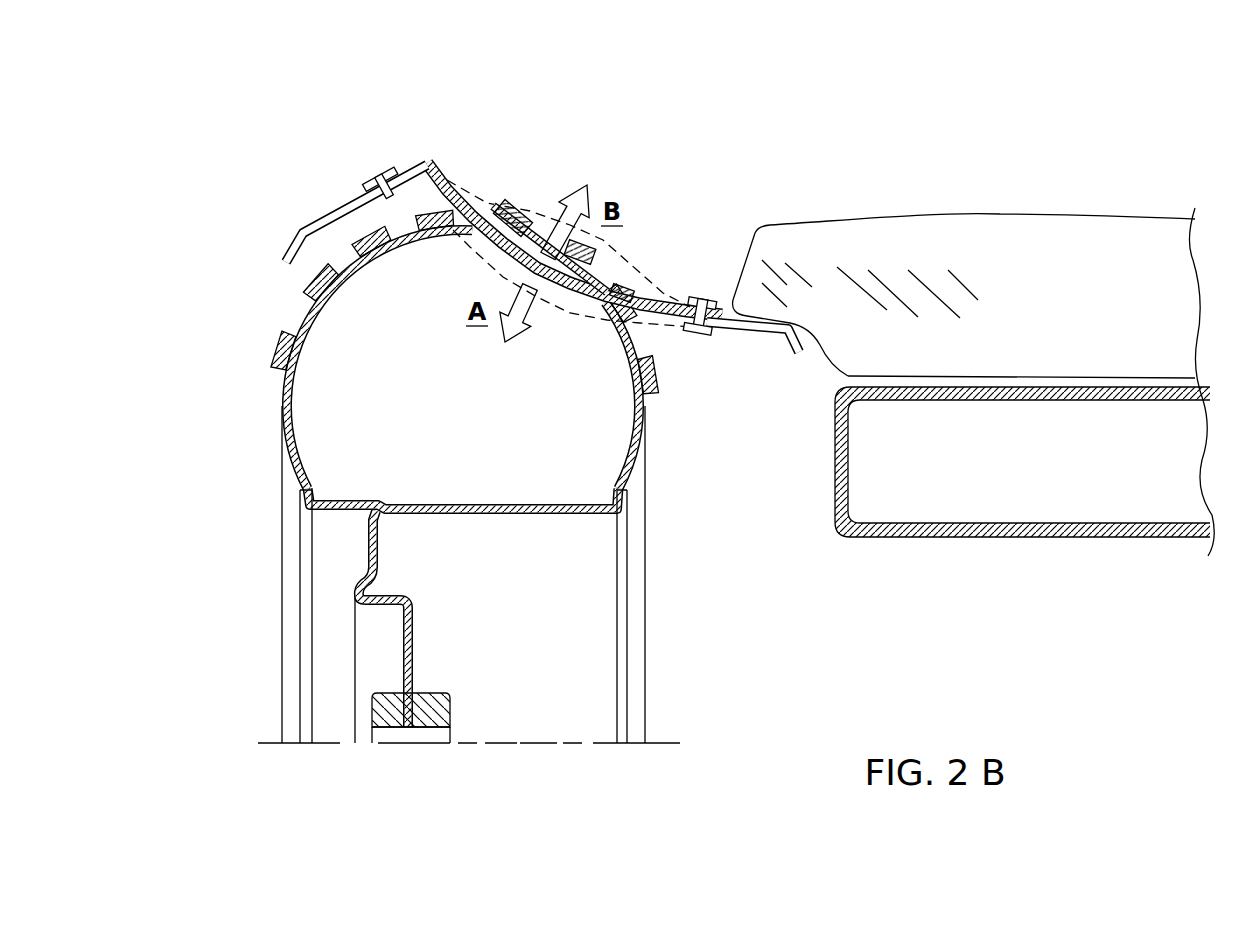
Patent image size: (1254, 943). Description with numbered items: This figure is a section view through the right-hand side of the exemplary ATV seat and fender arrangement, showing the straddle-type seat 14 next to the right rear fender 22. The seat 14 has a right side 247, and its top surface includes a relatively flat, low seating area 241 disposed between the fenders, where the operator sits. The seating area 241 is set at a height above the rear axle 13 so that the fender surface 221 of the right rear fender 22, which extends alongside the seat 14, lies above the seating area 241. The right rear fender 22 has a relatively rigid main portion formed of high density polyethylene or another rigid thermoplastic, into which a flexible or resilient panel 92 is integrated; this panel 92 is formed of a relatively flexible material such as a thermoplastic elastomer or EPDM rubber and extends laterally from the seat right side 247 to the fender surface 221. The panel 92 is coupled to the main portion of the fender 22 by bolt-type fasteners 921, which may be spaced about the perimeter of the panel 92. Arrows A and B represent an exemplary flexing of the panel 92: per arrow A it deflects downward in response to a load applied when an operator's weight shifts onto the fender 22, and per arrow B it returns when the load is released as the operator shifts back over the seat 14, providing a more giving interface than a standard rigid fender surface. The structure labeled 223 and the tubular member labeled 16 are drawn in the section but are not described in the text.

The right rear fender 22 is at (331, 152).
The bolt-type fasteners 921 is at (392, 172).
The fender surface 221 is at (428, 163).
The flexible or resilient panel 92 is at (466, 205).
The right side 247 is at (745, 280).
The seating area 241 is at (1000, 214).
The straddle-type seat 14 is at (1026, 315).
The support bracket 223 is at (233, 604).
The rear axle 13 is at (335, 745).
The tube beam 16 is at (1047, 537).